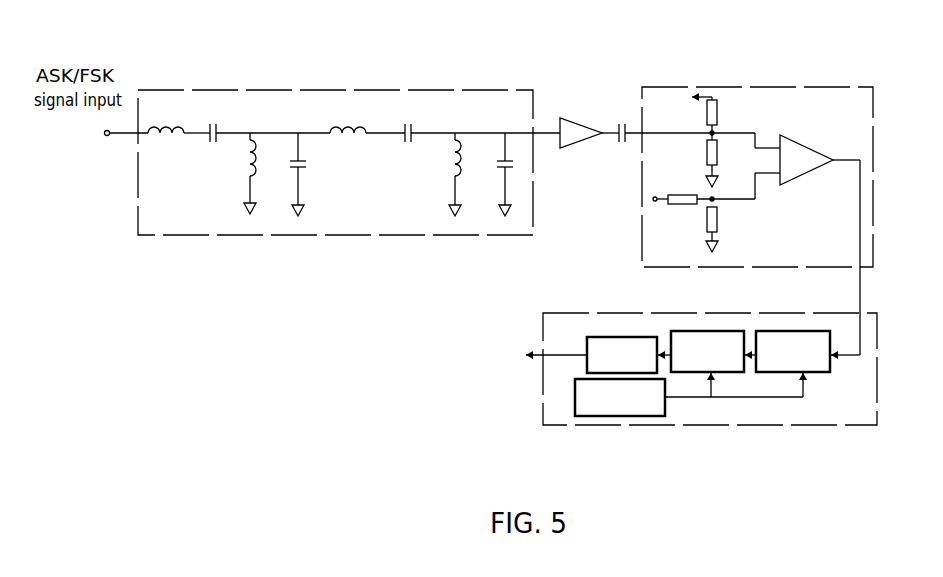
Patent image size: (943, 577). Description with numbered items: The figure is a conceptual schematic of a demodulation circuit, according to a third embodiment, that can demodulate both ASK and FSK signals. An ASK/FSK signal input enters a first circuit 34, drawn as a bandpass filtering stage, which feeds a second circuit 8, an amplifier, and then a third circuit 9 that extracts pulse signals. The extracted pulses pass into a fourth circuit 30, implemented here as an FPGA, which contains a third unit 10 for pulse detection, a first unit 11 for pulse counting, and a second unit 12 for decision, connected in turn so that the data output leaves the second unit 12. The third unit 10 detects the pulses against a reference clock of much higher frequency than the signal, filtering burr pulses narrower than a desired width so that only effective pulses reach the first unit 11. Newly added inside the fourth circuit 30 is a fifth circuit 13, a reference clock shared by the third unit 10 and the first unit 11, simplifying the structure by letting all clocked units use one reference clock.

The first circuit 34 is at (325, 86).
The second circuit 8 is at (578, 120).
The third circuit 9 is at (843, 83).
The fourth circuit 30 is at (540, 399).
The second unit 12 is at (630, 332).
The first unit 11 is at (731, 373).
The third unit 10 is at (817, 373).
The fifth circuit 13 is at (637, 417).